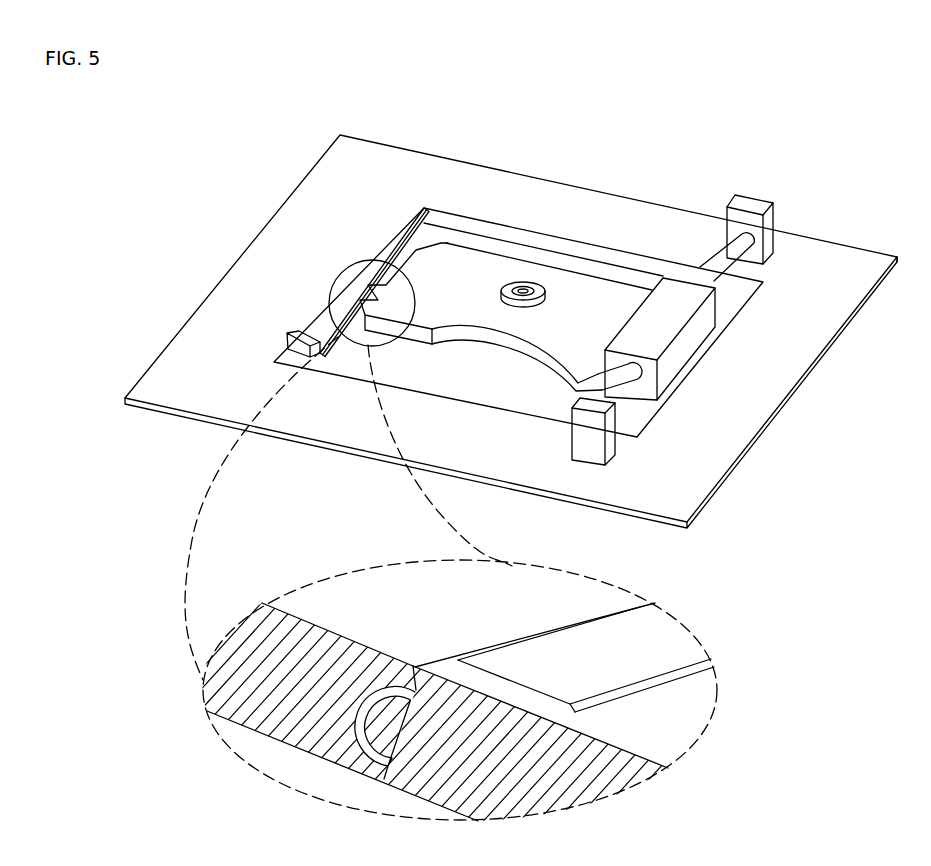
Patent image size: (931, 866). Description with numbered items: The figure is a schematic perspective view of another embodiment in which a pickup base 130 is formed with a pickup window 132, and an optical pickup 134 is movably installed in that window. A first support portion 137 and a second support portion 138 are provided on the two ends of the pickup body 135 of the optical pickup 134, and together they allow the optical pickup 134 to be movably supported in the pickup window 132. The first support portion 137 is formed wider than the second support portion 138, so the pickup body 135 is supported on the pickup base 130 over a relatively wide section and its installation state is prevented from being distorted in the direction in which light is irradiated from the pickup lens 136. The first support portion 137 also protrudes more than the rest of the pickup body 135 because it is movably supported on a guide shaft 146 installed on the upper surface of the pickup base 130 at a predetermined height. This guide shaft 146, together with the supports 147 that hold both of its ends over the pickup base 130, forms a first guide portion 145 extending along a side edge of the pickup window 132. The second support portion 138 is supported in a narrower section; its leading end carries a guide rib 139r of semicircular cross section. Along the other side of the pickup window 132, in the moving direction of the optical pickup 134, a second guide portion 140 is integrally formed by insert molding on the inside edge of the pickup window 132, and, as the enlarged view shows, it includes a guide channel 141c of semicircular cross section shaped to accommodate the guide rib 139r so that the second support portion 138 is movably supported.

The pickup base 130 is at (473, 180).
The pickup window 132 is at (505, 242).
The optical pickup 134 is at (496, 363).
The pickup body 135 is at (457, 267).
The pickup lens 136 is at (522, 291).
The first support portion 137 is at (655, 317).
The second support portion 138 is at (500, 690).
The guide rib 139r is at (350, 712).
The second guide portion 140 is at (672, 642).
The guide channel 141c is at (630, 667).
The first guide portion 145 is at (793, 182).
The guide shaft 146 is at (700, 255).
The supports 147 is at (748, 203).